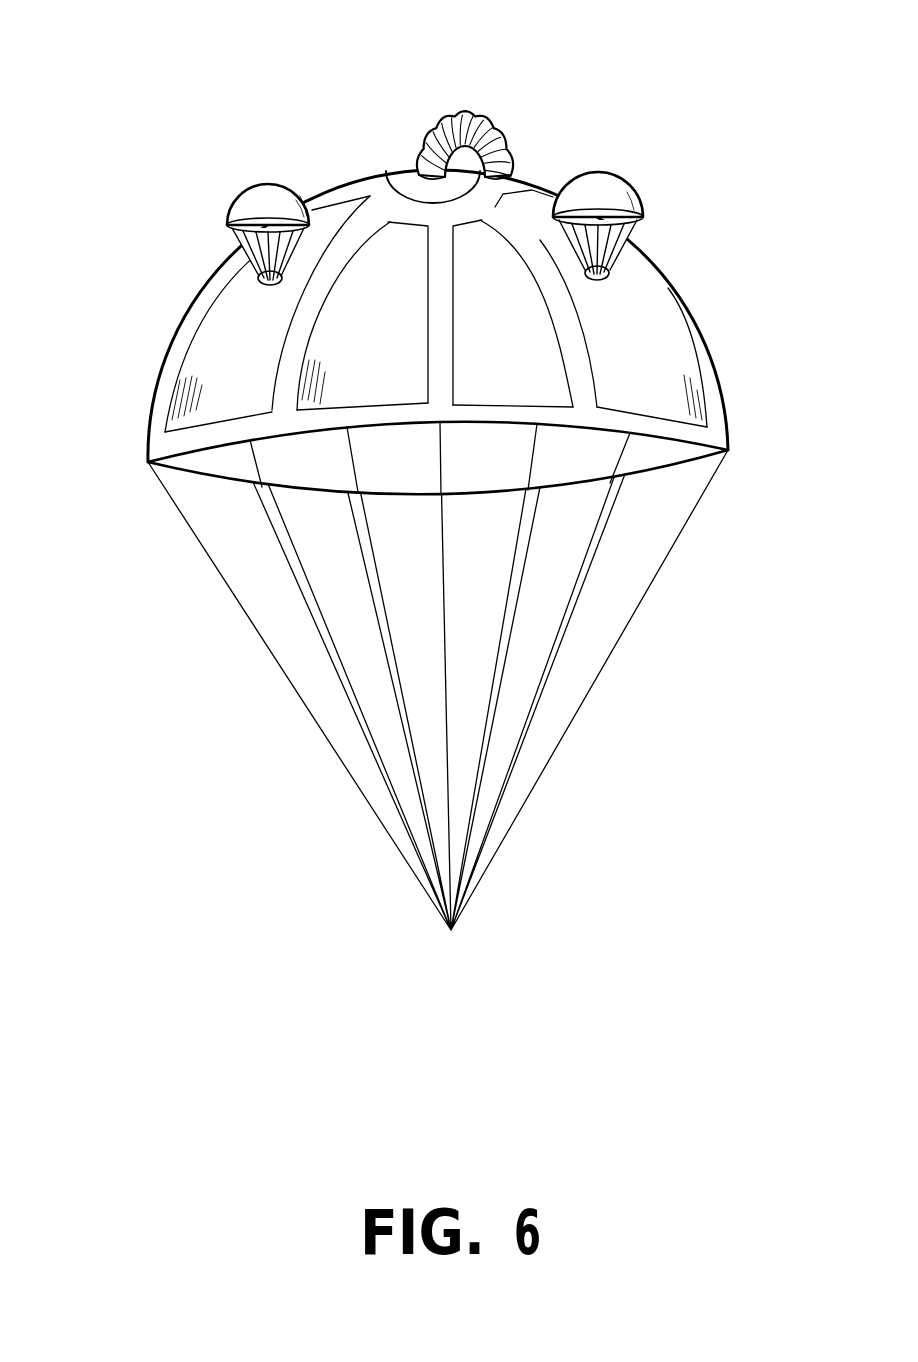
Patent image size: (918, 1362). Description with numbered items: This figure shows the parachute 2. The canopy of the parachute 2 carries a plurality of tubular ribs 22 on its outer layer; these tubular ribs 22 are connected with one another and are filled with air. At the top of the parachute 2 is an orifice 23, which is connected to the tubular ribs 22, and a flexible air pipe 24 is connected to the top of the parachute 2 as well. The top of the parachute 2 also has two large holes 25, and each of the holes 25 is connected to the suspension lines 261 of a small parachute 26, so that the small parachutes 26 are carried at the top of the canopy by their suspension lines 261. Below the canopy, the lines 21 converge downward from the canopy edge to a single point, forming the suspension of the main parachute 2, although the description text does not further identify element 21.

The parachute 2 is at (198, 291).
The shroud lines 21 is at (243, 620).
The tubular ribs 22 is at (152, 364).
The orifice 23 is at (418, 165).
The flexible air pipe 24 is at (462, 113).
The large holes 25 is at (268, 280).
The small parachute 26 is at (267, 184).
The suspension lines 261 is at (262, 229).